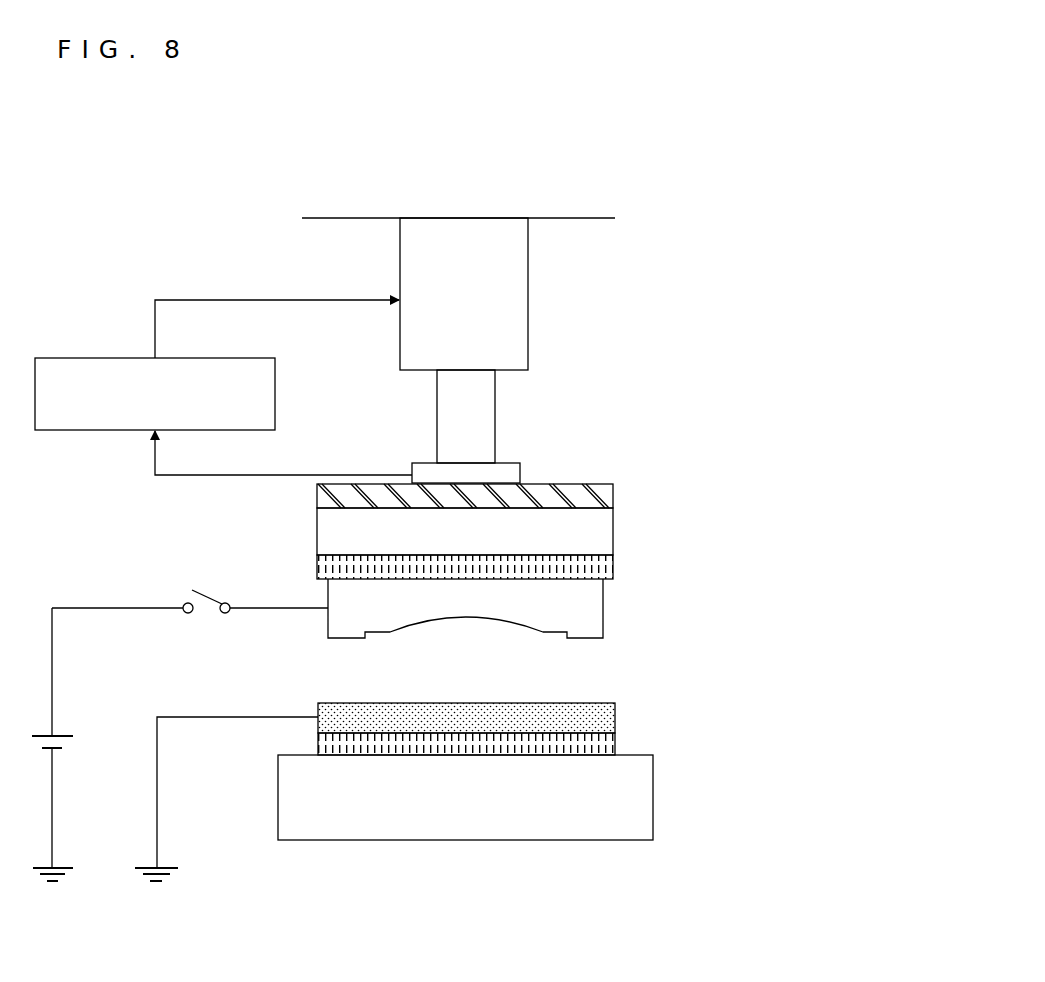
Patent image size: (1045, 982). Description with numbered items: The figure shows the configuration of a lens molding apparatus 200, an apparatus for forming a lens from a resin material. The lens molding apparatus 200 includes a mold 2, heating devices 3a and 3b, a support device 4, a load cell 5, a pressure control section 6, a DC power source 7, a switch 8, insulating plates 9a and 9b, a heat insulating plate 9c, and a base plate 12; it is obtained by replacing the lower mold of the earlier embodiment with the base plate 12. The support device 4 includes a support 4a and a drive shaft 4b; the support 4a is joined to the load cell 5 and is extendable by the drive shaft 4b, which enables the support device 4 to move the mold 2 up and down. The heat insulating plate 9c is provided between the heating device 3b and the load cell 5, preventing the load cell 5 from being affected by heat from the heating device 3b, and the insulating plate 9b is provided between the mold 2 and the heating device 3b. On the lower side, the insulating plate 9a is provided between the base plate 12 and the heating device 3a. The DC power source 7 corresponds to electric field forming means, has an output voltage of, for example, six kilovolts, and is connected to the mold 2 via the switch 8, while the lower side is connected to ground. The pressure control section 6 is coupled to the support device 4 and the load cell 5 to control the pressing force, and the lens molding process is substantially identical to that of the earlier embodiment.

The lens molding apparatus 200 is at (514, 150).
The support device 4 is at (583, 292).
The support 4a is at (495, 392).
The drive shaft 4b is at (528, 310).
The load cell 5 is at (520, 478).
The pressure control section 6 is at (275, 383).
The heat insulating plate 9c is at (613, 497).
The heating device 3b is at (613, 530).
The insulating plate 9b is at (613, 568).
The mold 2 is at (603, 612).
The switch 8 is at (200, 593).
The DC power source 7 is at (62, 736).
The base plate 12 is at (615, 712).
The insulating plate 9a is at (615, 745).
The heating device 3a is at (653, 800).